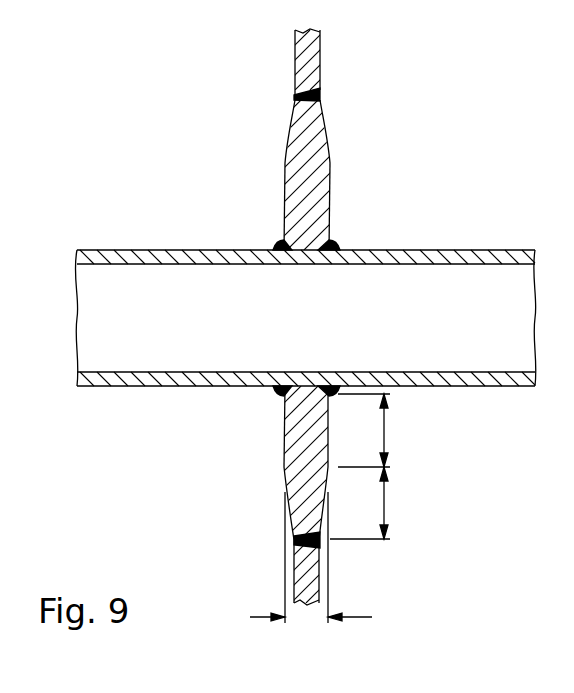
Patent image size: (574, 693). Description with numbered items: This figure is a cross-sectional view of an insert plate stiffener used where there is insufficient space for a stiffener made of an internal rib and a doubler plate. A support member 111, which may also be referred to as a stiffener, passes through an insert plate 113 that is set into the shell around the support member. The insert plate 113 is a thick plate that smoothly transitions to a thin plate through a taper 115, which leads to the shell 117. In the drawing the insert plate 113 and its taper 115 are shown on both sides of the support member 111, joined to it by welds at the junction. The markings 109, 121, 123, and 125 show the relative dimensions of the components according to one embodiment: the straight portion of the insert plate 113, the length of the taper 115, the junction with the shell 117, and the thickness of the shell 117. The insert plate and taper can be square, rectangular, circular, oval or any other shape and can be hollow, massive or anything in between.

The relative dimension 109 is at (385, 432).
The support member 111 is at (167, 250).
The insert plate 113 is at (329, 193).
The taper 115 is at (325, 138).
The shell 117 is at (320, 53).
The relative dimension 121 is at (385, 500).
The relative dimension 123 is at (320, 542).
The relative dimension 125 is at (307, 618).